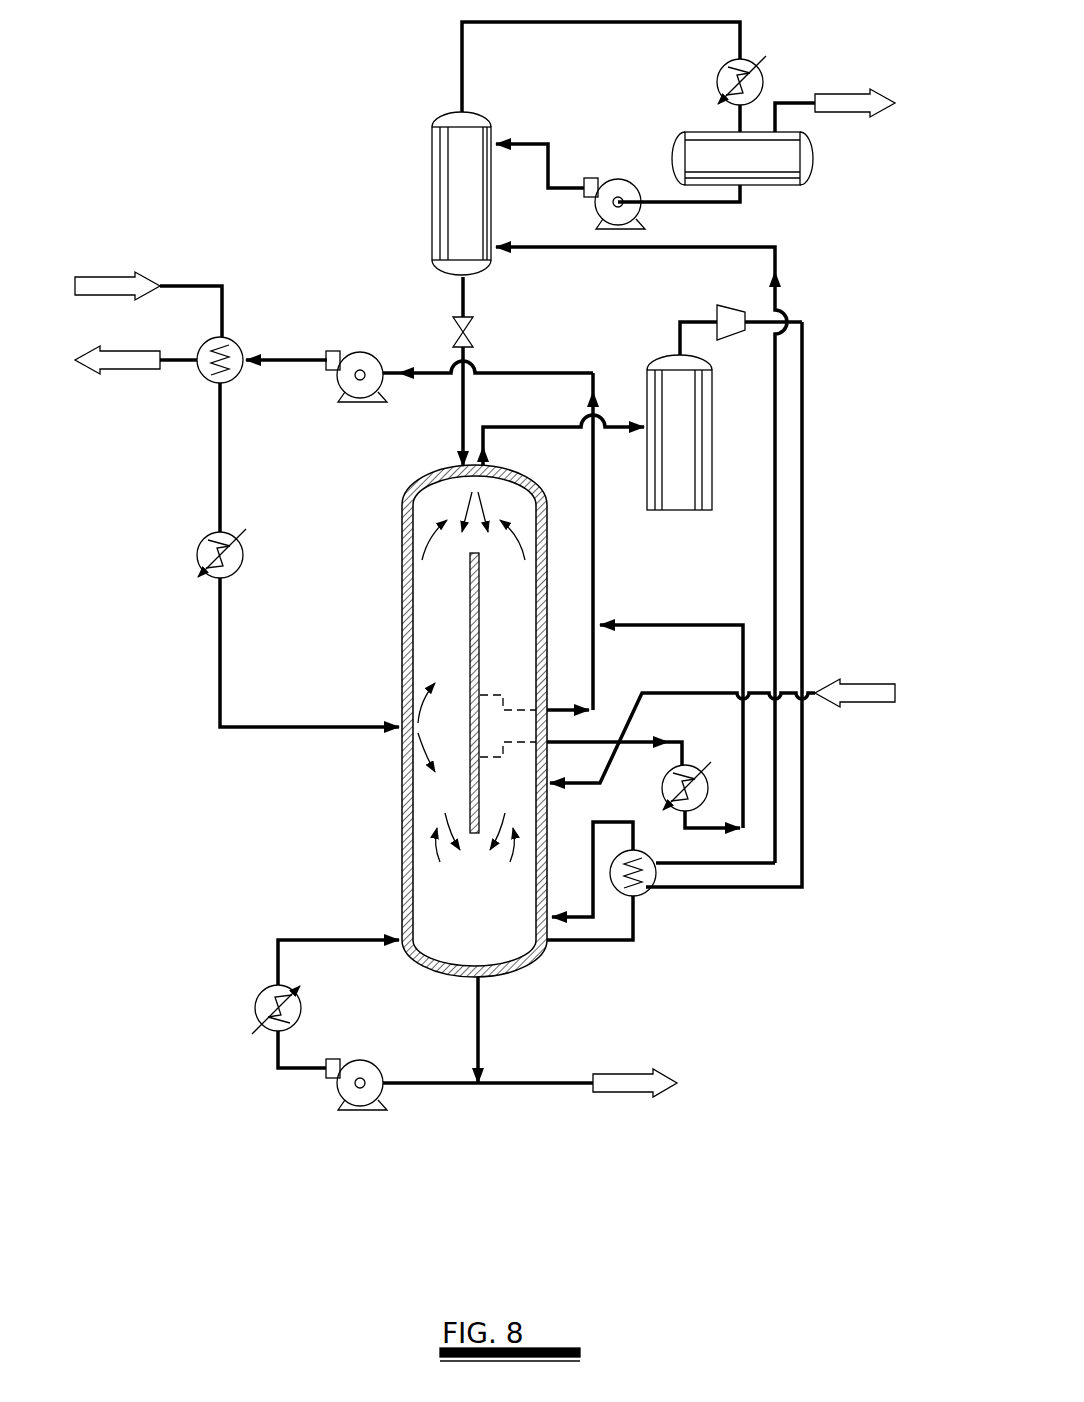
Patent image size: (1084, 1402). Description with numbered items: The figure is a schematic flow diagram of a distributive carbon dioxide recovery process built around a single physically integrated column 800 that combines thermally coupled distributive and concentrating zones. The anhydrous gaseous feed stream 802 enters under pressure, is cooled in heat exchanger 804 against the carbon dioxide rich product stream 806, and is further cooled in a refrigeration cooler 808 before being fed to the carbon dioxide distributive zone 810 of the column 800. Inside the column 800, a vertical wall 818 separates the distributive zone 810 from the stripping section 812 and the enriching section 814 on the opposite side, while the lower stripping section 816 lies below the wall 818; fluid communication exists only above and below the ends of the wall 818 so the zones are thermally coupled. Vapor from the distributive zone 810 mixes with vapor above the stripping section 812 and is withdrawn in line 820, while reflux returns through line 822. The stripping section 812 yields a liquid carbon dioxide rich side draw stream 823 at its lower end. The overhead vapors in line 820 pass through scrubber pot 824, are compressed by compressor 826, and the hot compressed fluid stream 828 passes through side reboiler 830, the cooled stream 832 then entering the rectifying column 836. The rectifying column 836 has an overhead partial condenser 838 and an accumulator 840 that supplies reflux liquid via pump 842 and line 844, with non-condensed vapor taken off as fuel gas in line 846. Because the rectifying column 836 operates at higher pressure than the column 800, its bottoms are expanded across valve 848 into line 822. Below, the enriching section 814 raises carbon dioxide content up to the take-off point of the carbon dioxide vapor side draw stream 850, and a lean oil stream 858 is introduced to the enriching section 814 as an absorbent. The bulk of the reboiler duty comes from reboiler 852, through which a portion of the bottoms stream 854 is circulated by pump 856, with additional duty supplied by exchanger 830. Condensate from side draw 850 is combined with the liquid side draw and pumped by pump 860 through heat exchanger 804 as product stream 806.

The physically integrated column 800 is at (548, 572).
The anhydrous gaseous feed stream 802 is at (178, 287).
The heat exchanger 804 is at (205, 380).
The CO2 rich product stream 806 is at (175, 355).
The heat exchanger 808 is at (210, 547).
The CO2 distributive zone 810 is at (437, 632).
The stripping section 812 is at (499, 601).
The enriching section 814 is at (508, 773).
The stripping section 816 is at (475, 871).
The wall 818 is at (468, 579).
The overhead vapor line 820 is at (570, 425).
The reflux line 822 is at (458, 428).
The liquid CO2 rich side draw stream 823 is at (597, 660).
The scrubber pot 824 is at (665, 380).
The compressor 826 is at (722, 310).
The hot compressed fluid stream 828 is at (737, 892).
The side reboiler 830 is at (645, 895).
The cooled stream 832 is at (773, 545).
The rectifying column 836 is at (450, 157).
The overhead partial condenser 838 is at (752, 60).
The accumulator 840 is at (780, 182).
The pump 842 is at (598, 182).
The reflux line 844 is at (548, 135).
The fuel gas product line 846 is at (790, 103).
The valve 848 is at (478, 337).
The CO2 vapor side draw stream 850 is at (650, 740).
The reboiler 852 is at (255, 990).
The bottoms stream 854 is at (482, 1020).
The pump 856 is at (370, 1063).
The lean oil stream 858 is at (700, 692).
The pump 860 is at (360, 350).